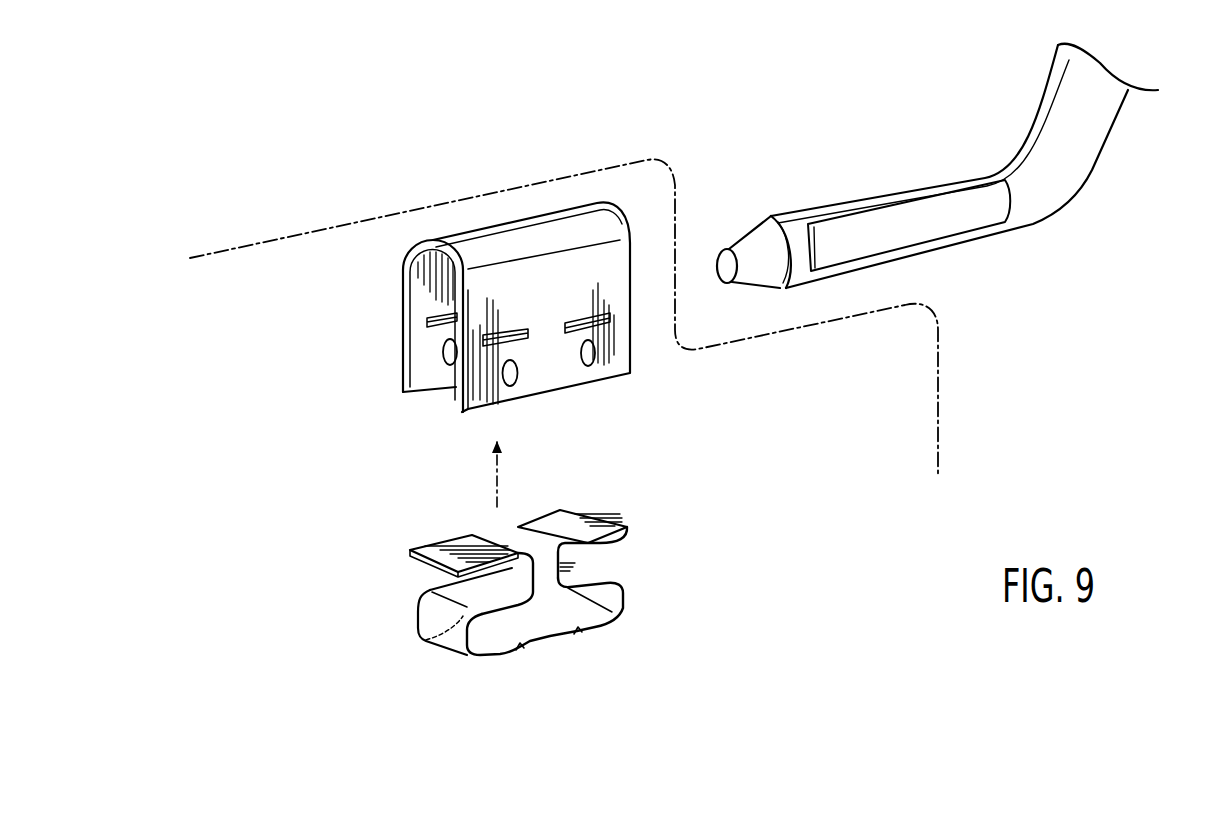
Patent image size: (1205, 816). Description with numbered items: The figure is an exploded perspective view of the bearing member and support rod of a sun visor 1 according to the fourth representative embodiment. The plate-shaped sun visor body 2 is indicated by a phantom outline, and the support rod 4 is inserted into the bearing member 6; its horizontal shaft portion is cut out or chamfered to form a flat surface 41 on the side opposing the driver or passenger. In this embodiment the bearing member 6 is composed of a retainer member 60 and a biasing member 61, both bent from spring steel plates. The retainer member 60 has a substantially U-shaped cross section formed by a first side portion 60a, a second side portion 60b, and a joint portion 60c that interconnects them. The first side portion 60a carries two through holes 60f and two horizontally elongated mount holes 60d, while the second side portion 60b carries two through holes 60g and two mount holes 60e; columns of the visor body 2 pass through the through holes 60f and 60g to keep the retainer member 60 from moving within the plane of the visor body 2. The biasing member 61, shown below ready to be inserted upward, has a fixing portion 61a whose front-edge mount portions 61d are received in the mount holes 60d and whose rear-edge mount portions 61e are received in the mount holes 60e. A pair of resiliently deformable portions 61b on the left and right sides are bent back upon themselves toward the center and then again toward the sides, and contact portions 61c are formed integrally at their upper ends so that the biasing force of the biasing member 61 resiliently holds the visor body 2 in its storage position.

The sun visor 1 is at (297, 104).
The sun visor body 2 is at (281, 234).
The support rod 4 is at (929, 169).
The flat surface 41 is at (952, 220).
The bearing member 6 is at (404, 191).
The retainer member 60 is at (472, 226).
The first side portion 60a is at (620, 335).
The second side portion 60b is at (422, 305).
The joint portion 60c is at (518, 242).
The mount holes 60d is at (592, 323).
The mount holes 60e is at (427, 340).
The through holes 60f is at (586, 378).
The through holes 60g is at (440, 365).
The biasing member 61 is at (623, 631).
The fixing portion 61a is at (498, 633).
The resiliently deformable portions 61b is at (453, 588).
The contact portions 61c is at (463, 550).
The mount portions 61d is at (578, 633).
The mount portions 61e is at (440, 630).